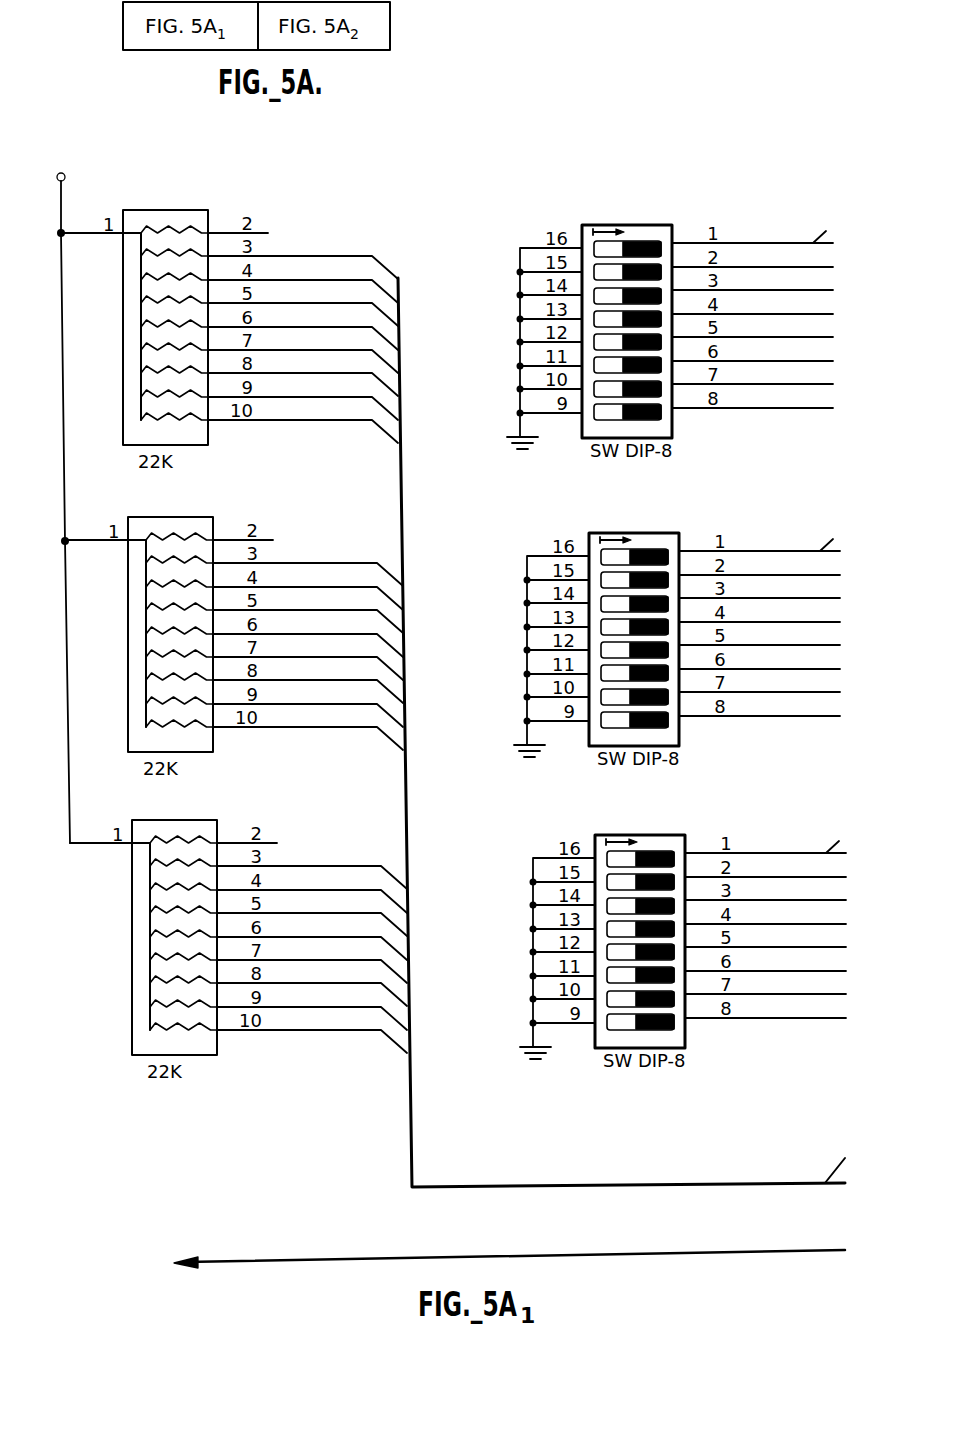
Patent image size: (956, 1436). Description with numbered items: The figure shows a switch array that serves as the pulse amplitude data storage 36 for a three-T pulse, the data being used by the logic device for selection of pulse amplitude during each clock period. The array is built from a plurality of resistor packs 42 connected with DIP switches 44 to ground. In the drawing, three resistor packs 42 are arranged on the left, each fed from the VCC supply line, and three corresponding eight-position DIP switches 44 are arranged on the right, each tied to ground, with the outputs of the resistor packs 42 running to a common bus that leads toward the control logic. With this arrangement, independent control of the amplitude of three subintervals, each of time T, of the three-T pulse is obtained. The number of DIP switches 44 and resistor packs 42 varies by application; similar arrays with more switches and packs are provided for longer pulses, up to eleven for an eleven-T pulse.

The pulse amplitude data storage 36 is at (491, 121).
The resistor packs 42 is at (118, 169).
The DIP switches 44 is at (572, 169).